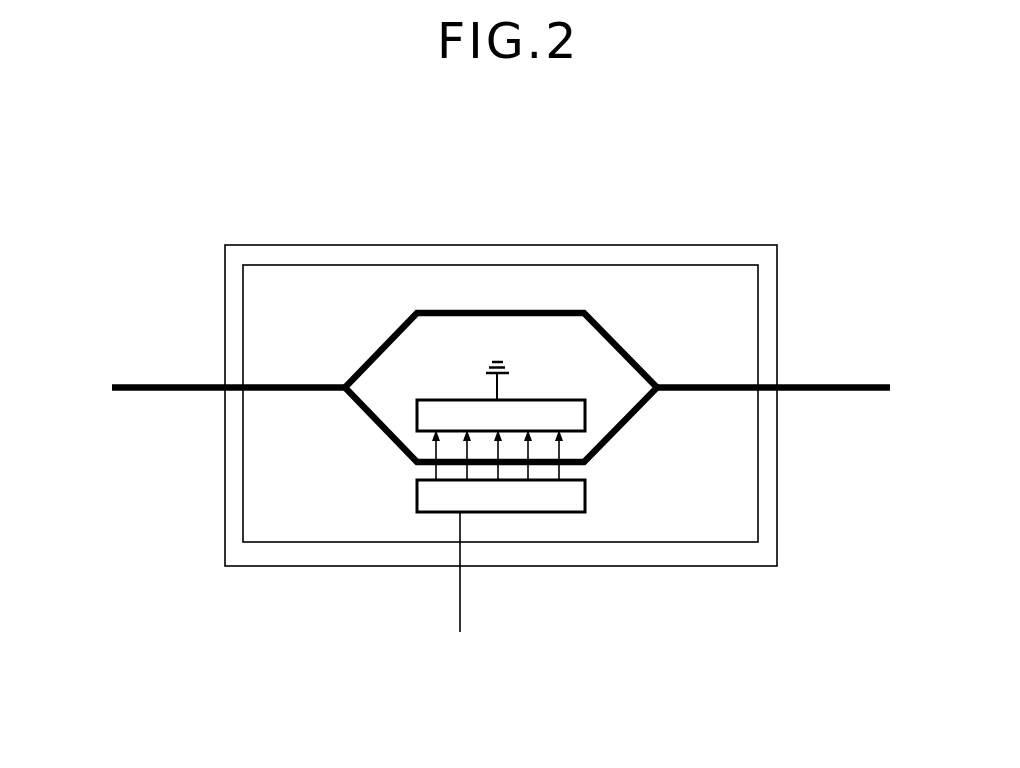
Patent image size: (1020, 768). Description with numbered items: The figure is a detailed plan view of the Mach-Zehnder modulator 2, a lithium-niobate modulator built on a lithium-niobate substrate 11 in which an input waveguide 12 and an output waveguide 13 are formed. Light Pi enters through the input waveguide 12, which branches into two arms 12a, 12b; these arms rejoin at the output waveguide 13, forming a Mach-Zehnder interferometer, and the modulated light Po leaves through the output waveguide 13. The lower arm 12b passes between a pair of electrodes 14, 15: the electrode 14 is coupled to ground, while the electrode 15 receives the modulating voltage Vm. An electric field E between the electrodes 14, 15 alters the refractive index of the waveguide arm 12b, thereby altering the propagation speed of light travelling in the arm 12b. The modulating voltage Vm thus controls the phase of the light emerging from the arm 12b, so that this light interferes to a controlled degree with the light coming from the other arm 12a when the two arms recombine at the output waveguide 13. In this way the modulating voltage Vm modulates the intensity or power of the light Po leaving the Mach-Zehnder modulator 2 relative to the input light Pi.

The Mach-Zehnder modulator 2 is at (727, 248).
The lithium-niobate substrate 11 is at (600, 265).
The input waveguide 12 is at (295, 383).
The arm 12a is at (370, 356).
The arm 12b is at (387, 435).
The output waveguide 13 is at (693, 382).
The electrode 14 is at (549, 408).
The electrode 15 is at (513, 512).
The electric field E is at (548, 455).
The input light Pi is at (137, 383).
The output light Po is at (850, 382).
The modulating voltage Vm is at (472, 650).